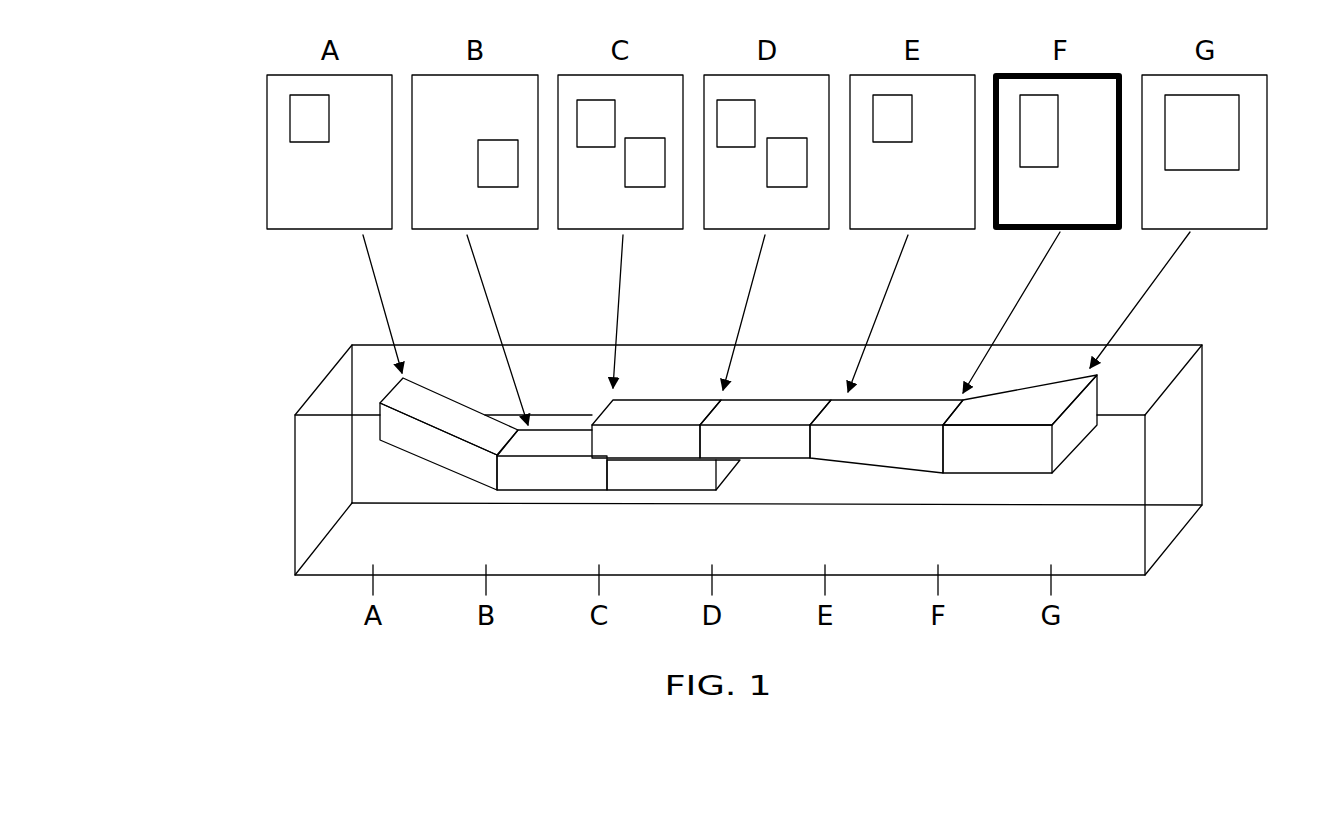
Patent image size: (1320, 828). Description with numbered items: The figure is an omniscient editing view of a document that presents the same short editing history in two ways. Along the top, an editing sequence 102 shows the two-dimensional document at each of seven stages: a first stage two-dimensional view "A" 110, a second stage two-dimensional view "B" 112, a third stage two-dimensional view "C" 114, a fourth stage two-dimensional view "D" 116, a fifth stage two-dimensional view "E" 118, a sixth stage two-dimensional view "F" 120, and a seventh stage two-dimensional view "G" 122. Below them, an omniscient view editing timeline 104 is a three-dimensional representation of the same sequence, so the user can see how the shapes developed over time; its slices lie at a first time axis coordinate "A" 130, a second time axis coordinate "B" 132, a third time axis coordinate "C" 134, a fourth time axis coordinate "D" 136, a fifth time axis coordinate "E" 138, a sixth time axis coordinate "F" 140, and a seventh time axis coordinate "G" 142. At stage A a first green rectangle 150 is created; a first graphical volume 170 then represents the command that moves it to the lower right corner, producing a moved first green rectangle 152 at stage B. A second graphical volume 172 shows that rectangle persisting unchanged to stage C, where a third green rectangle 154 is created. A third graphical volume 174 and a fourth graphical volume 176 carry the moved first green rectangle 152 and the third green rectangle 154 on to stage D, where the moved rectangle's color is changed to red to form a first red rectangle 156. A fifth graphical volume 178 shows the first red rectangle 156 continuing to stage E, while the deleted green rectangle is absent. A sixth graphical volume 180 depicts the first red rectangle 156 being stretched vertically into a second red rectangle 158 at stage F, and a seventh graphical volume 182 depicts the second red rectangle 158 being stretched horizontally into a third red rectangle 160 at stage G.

The editing sequence 102 is at (252, 226).
The omniscient view editing timeline 104 is at (258, 494).
The first stage two-dimensional view "A" 110 is at (348, 230).
The second stage two-dimensional view "B" 112 is at (460, 230).
The third stage two-dimensional view "C" 114 is at (604, 230).
The fourth stage two-dimensional view "D" 116 is at (744, 230).
The fifth stage two-dimensional view "E" 118 is at (882, 230).
The sixth stage two-dimensional view "F" 120 is at (1095, 231).
The seventh stage two-dimensional view "G" 122 is at (1230, 230).
The first time axis coordinate "A" 130 is at (374, 568).
The second time axis coordinate "B" 132 is at (487, 568).
The third time axis coordinate "C" 134 is at (600, 568).
The fourth time axis coordinate "D" 136 is at (713, 568).
The fifth time axis coordinate "E" 138 is at (826, 568).
The sixth time axis coordinate "F" 140 is at (939, 568).
The seventh time axis coordinate "G" 142 is at (1052, 568).
The first green rectangle 150 is at (308, 143).
The moved first green rectangle 152 is at (497, 140).
The third green rectangle 154 is at (598, 148).
The first red rectangle 156 is at (740, 148).
The second red rectangle 158 is at (1035, 168).
The third red rectangle 160 is at (1210, 171).
The first graphical volume 170 is at (425, 402).
The second graphical volume 172 is at (540, 433).
The third graphical volume 174 is at (690, 492).
The fourth graphical volume 176 is at (645, 410).
The fifth graphical volume 178 is at (755, 410).
The sixth graphical volume 180 is at (880, 410).
The seventh graphical volume 182 is at (1008, 410).